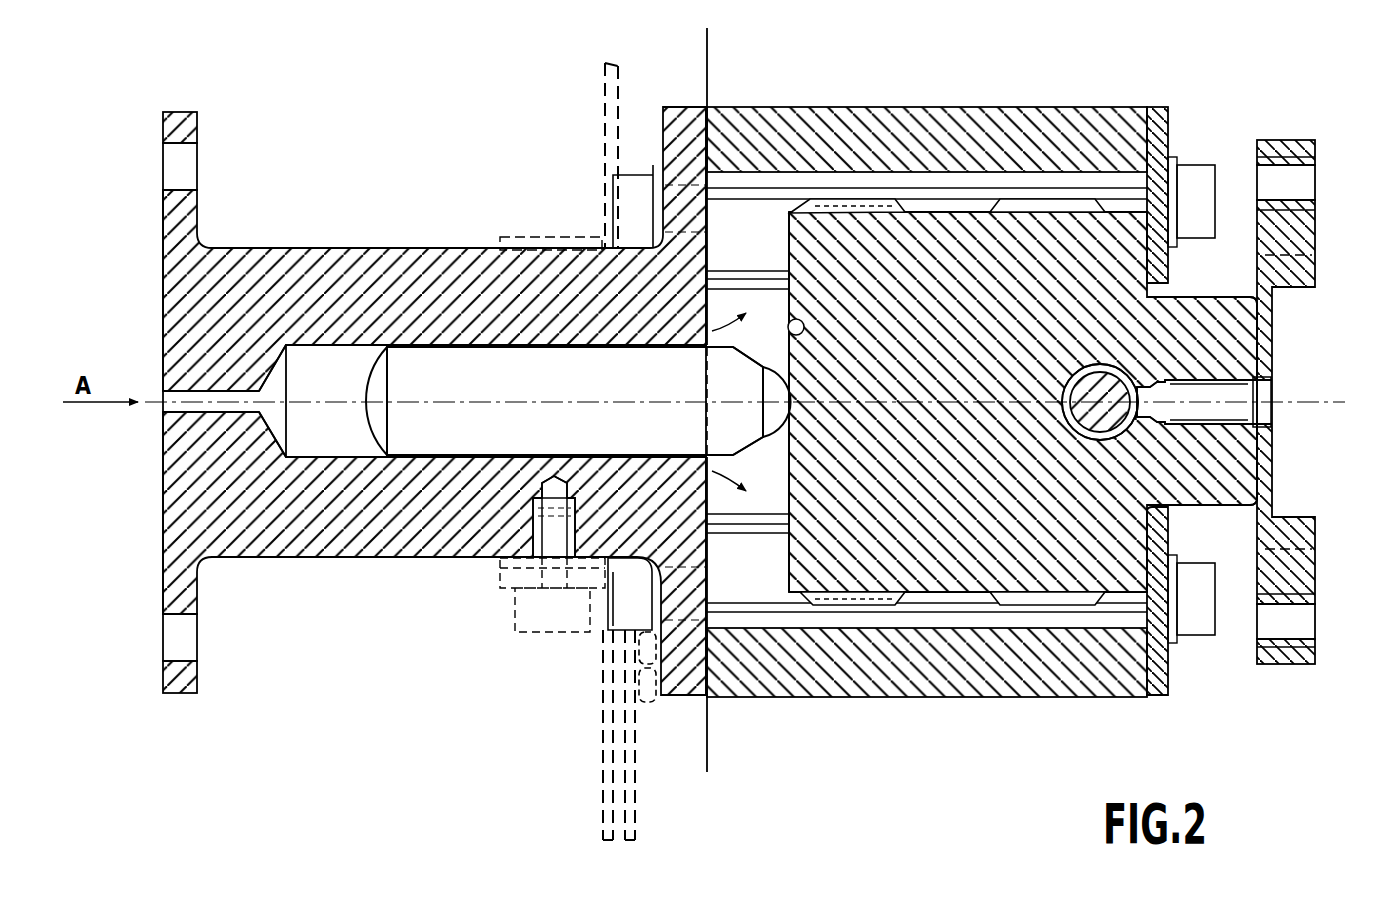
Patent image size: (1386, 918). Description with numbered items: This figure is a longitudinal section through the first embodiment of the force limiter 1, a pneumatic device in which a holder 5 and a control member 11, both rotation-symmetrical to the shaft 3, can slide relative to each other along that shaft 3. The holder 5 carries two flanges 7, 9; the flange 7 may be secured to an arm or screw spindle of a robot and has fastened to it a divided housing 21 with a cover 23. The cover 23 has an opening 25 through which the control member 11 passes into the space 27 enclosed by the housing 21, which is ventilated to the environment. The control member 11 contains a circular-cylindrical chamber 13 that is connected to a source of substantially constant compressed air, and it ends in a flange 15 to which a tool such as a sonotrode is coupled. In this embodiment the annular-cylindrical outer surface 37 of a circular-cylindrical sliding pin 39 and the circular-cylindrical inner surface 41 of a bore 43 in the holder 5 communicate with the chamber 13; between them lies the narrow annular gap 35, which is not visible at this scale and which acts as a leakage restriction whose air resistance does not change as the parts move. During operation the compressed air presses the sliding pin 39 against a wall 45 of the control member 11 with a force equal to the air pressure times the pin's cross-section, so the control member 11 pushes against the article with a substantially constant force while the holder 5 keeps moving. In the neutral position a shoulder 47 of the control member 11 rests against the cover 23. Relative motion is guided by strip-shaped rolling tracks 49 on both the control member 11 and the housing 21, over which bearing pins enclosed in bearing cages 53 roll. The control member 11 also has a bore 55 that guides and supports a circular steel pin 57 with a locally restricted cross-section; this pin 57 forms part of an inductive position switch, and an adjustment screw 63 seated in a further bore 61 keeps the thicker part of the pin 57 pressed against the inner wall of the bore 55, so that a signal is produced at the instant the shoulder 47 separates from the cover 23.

The force limiter 1 is at (961, 98).
The shaft 3 is at (704, 44).
The holder 5 is at (232, 486).
The flange 7 is at (186, 217).
The flange 9 is at (684, 140).
The control member 11 is at (962, 556).
The chamber 13 is at (335, 442).
The flange 15 is at (1298, 233).
The housing 21 is at (771, 125).
The cover 23 is at (1166, 684).
The opening 25 is at (1166, 290).
The space 27 is at (772, 500).
The gap 35 is at (644, 348).
The outer surface 37 is at (440, 459).
The sliding pin 39 is at (426, 360).
The inner surface 41 is at (560, 354).
The bore 43 is at (707, 401).
The wall 45 is at (787, 331).
The shoulder 47 is at (1156, 540).
The rolling tracks 49 is at (827, 206).
The bearing cages 53 is at (850, 197).
The bore 55 is at (1068, 428).
The pin 57 is at (1076, 388).
The bore 61 is at (1262, 398).
The adjustment screw 63 is at (1250, 372).